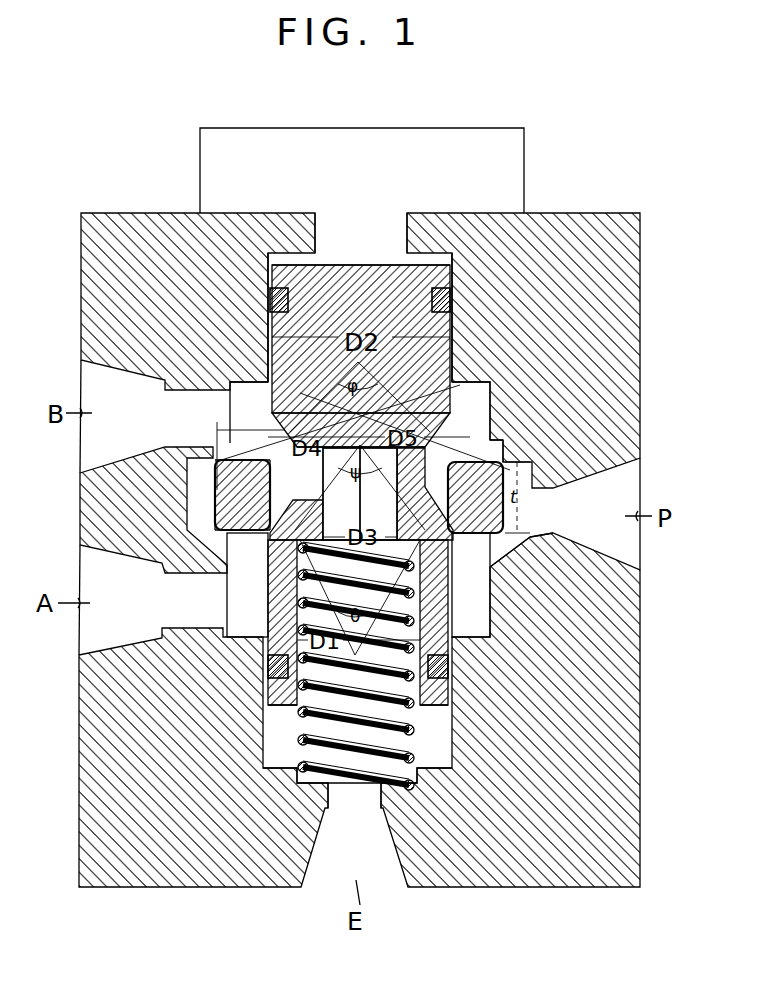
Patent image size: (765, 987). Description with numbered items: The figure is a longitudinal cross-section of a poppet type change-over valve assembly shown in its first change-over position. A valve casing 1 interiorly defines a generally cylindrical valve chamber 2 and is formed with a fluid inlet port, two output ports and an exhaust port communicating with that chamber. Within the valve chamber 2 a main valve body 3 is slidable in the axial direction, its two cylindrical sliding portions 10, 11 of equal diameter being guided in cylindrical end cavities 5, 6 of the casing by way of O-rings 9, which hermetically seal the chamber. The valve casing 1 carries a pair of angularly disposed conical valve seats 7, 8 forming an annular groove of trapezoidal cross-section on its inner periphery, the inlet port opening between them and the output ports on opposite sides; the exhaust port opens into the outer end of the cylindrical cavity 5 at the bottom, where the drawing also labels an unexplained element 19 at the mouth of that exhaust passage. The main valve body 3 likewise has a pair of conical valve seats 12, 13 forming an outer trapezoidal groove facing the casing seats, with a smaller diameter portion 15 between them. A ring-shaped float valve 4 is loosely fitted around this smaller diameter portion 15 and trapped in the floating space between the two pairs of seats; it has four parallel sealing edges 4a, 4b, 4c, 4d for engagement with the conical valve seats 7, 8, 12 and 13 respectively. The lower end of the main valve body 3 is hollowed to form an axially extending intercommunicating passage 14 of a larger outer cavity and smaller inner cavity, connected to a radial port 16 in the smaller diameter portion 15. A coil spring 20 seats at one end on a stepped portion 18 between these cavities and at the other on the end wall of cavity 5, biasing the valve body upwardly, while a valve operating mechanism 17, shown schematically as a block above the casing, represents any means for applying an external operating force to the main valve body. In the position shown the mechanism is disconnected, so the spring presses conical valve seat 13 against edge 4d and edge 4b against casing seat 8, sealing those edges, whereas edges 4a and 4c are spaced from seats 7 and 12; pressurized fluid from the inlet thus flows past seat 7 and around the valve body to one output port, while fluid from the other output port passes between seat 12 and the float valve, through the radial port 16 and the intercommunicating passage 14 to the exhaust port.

The valve casing 1 is at (562, 200).
The valve chamber 2 is at (455, 383).
The main valve body 3 is at (382, 240).
The float valve 4 is at (202, 495).
The sealing edge 4a is at (230, 525).
The sealing edge 4b is at (218, 460).
The sealing edge 4c is at (272, 462).
The sealing edge 4d is at (228, 532).
The cylindrical end cavity 5 is at (445, 755).
The cylindrical end cavity 6 is at (458, 262).
The conical valve seat 7 is at (510, 550).
The conical valve seat 8 is at (486, 456).
The O-ring 9 is at (270, 300).
The cylindrical sliding portion 10 is at (268, 700).
The cylindrical sliding portion 11 is at (274, 268).
The conical valve seat 12 is at (262, 425).
The conical valve seat 13 is at (260, 540).
The intercommunicating passage 14 is at (300, 607).
The smaller diameter portion 15 is at (475, 497).
The radial port 16 is at (350, 478).
The valve operating mechanism 17 is at (246, 138).
The stepped portion 18 is at (393, 537).
The drain passage 19 is at (322, 790).
The coil spring 20 is at (306, 719).